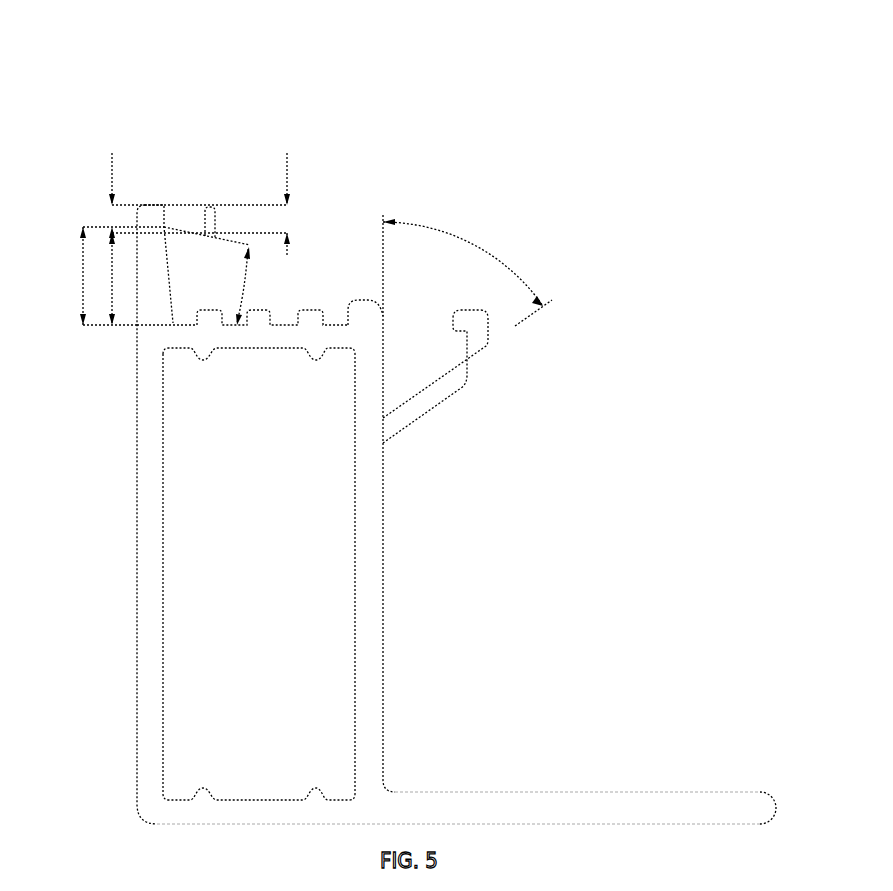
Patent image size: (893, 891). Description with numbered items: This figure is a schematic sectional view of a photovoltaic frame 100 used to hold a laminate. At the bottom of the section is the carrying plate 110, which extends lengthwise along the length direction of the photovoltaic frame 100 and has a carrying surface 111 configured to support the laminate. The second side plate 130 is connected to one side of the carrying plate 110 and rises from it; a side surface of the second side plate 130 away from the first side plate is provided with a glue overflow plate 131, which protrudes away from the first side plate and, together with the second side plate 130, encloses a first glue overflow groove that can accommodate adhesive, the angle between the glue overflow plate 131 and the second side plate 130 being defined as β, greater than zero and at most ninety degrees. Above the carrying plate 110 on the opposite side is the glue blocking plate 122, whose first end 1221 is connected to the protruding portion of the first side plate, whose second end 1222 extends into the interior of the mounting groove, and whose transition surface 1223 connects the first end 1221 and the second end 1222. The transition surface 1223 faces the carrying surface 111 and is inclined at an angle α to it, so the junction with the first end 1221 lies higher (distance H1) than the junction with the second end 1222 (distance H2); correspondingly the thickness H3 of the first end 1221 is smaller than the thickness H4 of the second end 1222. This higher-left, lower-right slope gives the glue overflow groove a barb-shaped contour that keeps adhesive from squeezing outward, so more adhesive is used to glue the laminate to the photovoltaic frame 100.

The photovoltaic frame 100 is at (142, 34).
The carrying plate 110 is at (237, 338).
The carrying surface 111 is at (293, 307).
The glue blocking plate 122 is at (265, 92).
The first end 1221 is at (153, 213).
The second end 1222 is at (209, 226).
The transition surface 1223 is at (183, 224).
The second side plate 130 is at (368, 638).
The glue overflow plate 131 is at (423, 408).